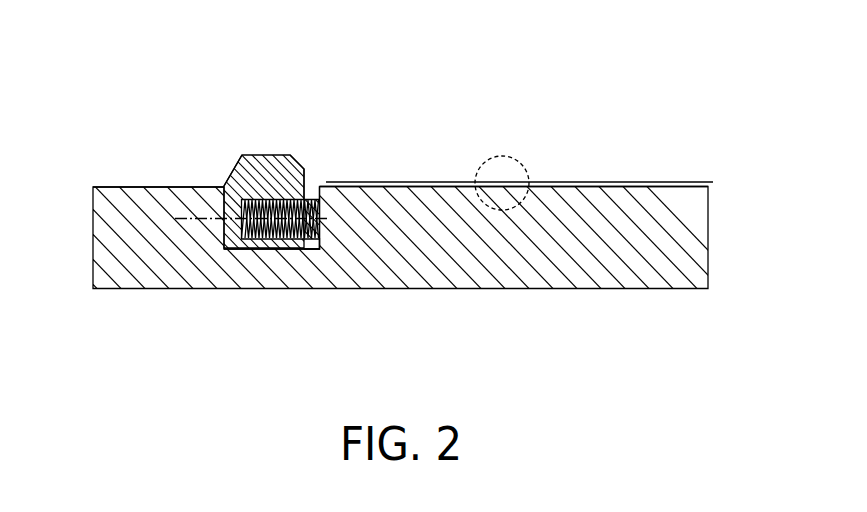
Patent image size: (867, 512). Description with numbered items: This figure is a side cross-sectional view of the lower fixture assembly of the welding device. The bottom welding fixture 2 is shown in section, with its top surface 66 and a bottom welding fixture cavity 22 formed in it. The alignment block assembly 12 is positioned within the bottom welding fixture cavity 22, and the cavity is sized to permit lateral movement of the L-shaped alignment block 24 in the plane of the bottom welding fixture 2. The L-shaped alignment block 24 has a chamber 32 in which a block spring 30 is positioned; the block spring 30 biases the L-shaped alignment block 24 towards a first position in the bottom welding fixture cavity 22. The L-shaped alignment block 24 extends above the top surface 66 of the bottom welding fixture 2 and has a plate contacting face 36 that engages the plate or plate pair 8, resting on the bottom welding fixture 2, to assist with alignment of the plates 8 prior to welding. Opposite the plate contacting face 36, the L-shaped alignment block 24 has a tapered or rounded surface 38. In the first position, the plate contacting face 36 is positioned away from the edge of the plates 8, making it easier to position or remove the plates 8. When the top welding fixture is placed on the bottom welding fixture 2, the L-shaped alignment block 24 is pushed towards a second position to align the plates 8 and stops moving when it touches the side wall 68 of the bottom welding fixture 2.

The bottom welding fixture 2 is at (130, 240).
The plate or plate pair 8 is at (639, 182).
The alignment block assembly 12 is at (265, 184).
The bottom welding fixture cavity 22 is at (317, 192).
The L-shaped alignment block 24 is at (246, 249).
The block spring 30 is at (291, 239).
The chamber 32 is at (242, 238).
The plate contacting face 36 is at (305, 170).
The tapered or rounded surface 38 is at (232, 168).
The top surface 66 is at (147, 187).
The side wall 68 is at (322, 243).